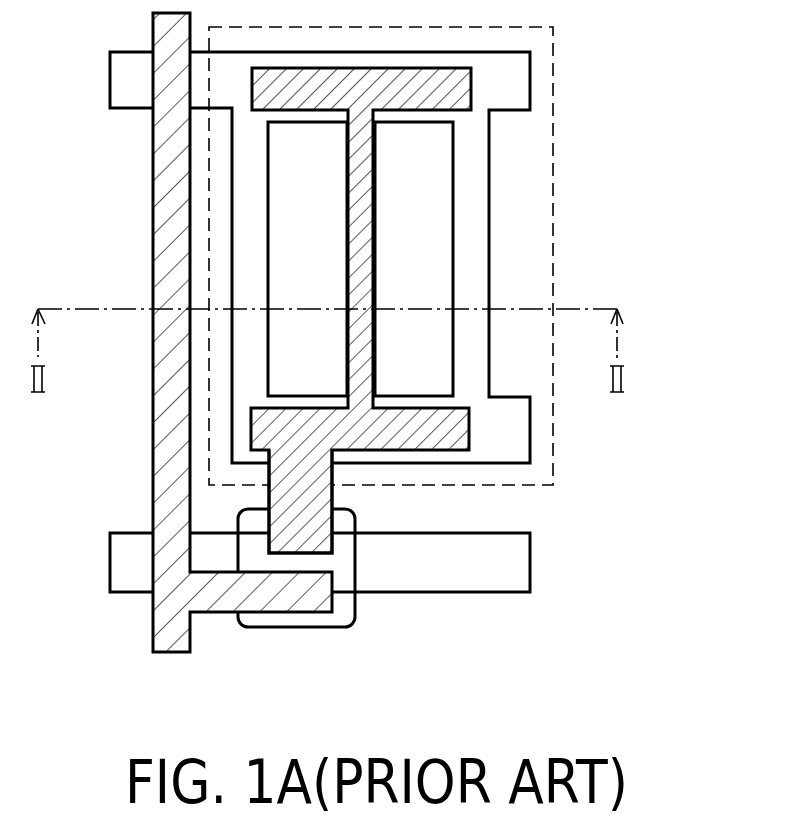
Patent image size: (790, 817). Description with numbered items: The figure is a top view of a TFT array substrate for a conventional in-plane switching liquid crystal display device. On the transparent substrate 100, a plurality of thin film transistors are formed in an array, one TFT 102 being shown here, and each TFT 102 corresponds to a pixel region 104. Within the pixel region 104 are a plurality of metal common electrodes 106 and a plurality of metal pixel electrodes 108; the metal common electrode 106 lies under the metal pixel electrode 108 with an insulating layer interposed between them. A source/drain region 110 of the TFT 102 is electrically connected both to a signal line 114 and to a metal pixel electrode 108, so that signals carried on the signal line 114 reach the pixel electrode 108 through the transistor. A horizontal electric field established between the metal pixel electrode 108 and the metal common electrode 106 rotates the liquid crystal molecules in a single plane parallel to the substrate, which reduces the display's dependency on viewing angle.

The transparent substrate 100 is at (701, 691).
The TFT 102 is at (297, 627).
The pixel region 104 is at (553, 96).
The metal common electrode 106 is at (480, 271).
The metal pixel electrode 108 is at (365, 207).
The source/drain region 110 is at (337, 585).
The signal line 114 is at (170, 222).